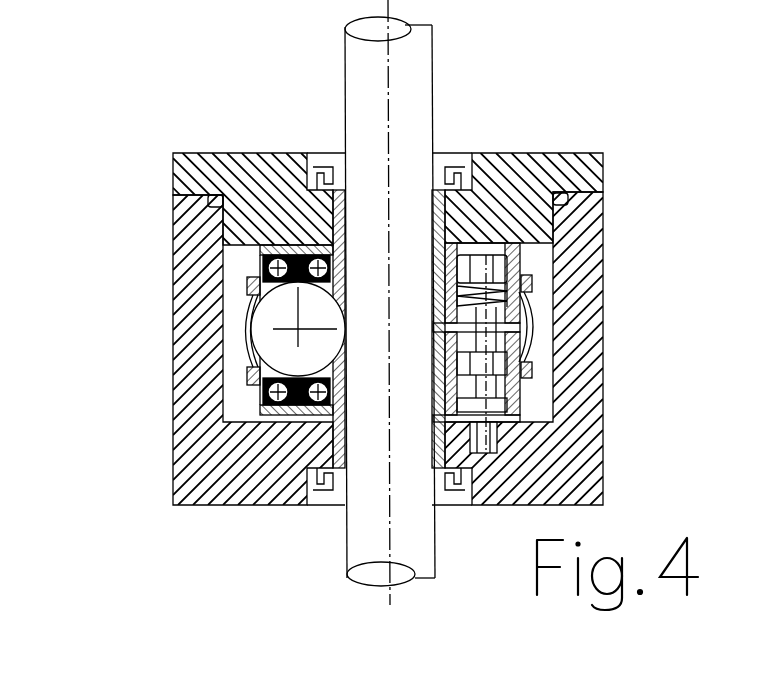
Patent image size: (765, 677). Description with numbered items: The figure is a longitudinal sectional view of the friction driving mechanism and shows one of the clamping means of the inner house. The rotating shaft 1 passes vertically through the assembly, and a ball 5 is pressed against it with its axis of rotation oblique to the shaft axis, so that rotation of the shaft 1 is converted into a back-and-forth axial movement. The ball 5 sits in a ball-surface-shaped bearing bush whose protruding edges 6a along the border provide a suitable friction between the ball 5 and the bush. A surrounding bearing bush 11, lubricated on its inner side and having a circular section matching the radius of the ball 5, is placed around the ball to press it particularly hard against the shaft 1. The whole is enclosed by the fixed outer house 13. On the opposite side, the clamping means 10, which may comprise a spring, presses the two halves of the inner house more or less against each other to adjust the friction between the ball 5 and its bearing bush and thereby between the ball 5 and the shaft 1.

The shaft 1 is at (422, 90).
The ball 5 is at (258, 338).
The protruding edges 6a is at (263, 387).
The clamping means 10 is at (490, 332).
The surrounding bearing bush 11 is at (258, 288).
The outer house 13 is at (585, 363).